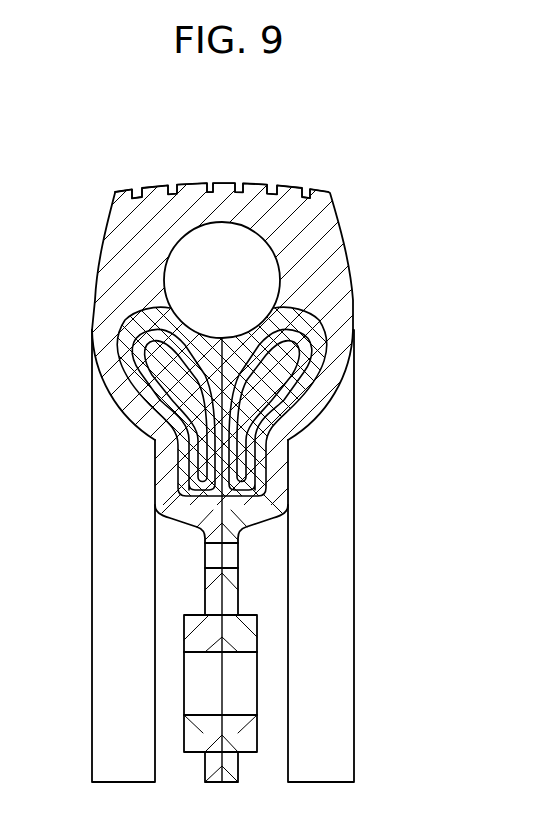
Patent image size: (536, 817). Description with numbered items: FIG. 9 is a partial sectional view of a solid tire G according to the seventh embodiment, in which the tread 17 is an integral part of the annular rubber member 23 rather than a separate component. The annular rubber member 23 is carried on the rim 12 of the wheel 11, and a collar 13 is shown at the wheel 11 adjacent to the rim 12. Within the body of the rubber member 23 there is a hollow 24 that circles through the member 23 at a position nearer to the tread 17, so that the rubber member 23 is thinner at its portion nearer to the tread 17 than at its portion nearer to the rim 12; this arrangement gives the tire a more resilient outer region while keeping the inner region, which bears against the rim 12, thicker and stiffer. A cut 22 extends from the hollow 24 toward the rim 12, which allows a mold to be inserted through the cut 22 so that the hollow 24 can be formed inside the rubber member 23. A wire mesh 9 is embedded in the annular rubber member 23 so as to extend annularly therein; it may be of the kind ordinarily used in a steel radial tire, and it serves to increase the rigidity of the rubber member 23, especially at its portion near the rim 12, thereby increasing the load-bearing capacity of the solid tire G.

The solid tire G is at (334, 178).
The tread 17 is at (220, 186).
The annular rubber member 23 is at (317, 244).
The hollow 24 is at (270, 266).
The cut 22 is at (237, 336).
The wire mesh 9 is at (340, 326).
The rim 12 is at (237, 514).
The collar 13 is at (237, 549).
The wheel 11 is at (237, 634).